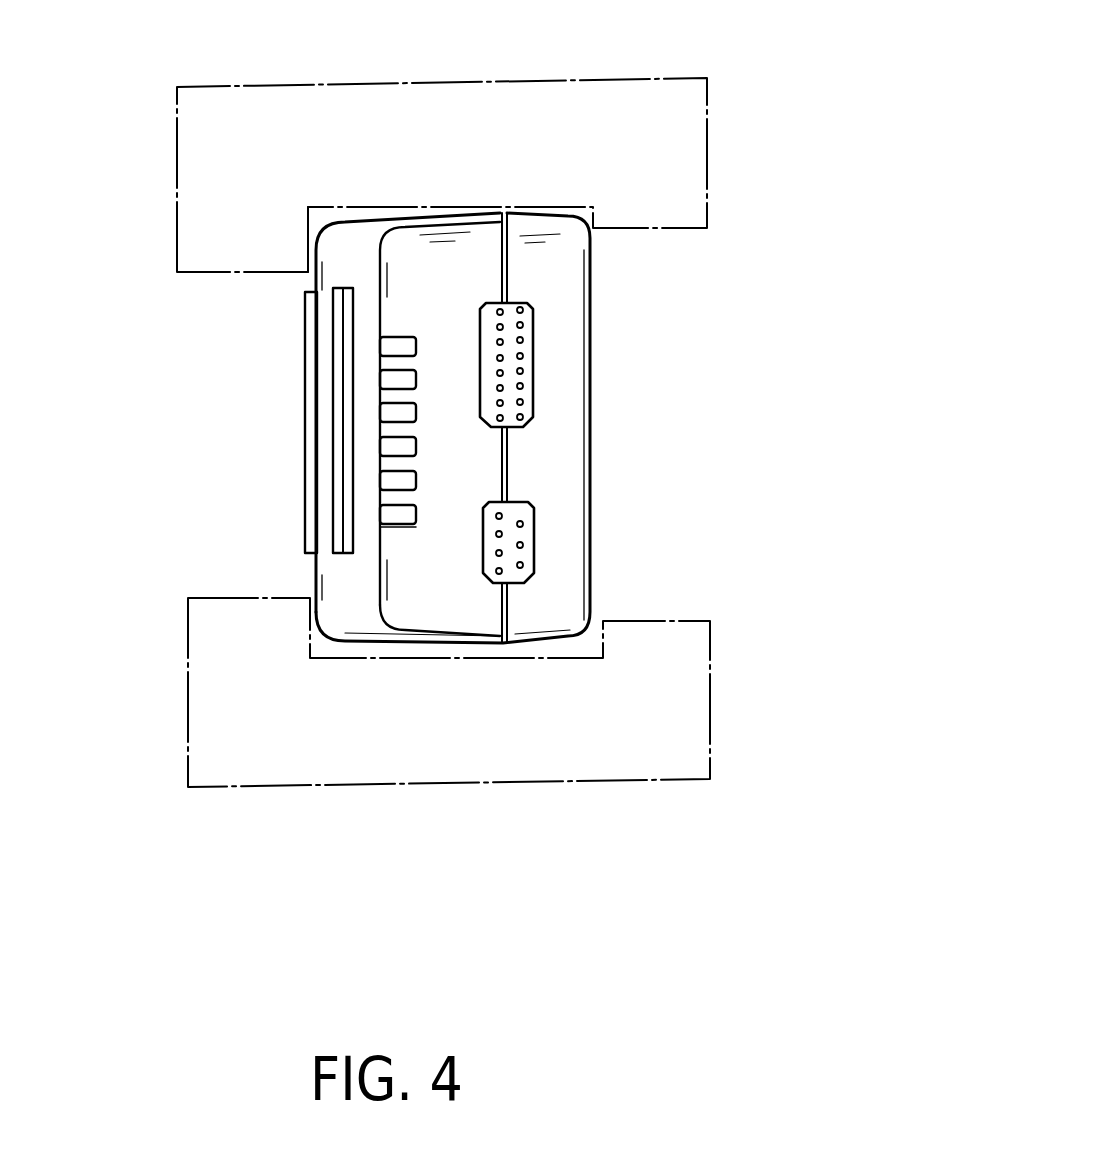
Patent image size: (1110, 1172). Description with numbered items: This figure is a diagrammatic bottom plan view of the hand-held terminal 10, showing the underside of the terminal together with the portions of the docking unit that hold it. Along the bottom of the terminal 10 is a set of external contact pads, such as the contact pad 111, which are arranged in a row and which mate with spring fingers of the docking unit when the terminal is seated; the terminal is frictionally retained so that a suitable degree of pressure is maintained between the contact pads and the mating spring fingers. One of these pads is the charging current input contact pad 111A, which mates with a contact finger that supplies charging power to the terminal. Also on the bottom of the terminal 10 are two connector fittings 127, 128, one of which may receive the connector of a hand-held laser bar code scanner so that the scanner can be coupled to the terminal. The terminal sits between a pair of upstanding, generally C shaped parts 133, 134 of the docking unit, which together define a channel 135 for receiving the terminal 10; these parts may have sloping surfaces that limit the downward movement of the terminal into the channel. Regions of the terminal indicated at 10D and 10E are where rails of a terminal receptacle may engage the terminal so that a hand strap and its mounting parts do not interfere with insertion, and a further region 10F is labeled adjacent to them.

The terminal 10 is at (625, 443).
The terminal region engaged by rail 10D is at (323, 471).
The terminal region engaged by rail 10E is at (305, 385).
The groove / rib between flanges 10F is at (345, 513).
The contact pad 111 is at (398, 337).
The charging current input contact pad 111A is at (403, 524).
The connector fitting 127 is at (533, 368).
The connector fitting 128 is at (535, 545).
The upstanding generally C shaped part 133 is at (707, 102).
The upstanding generally C shaped part 134 is at (710, 668).
The channel 135 is at (327, 208).